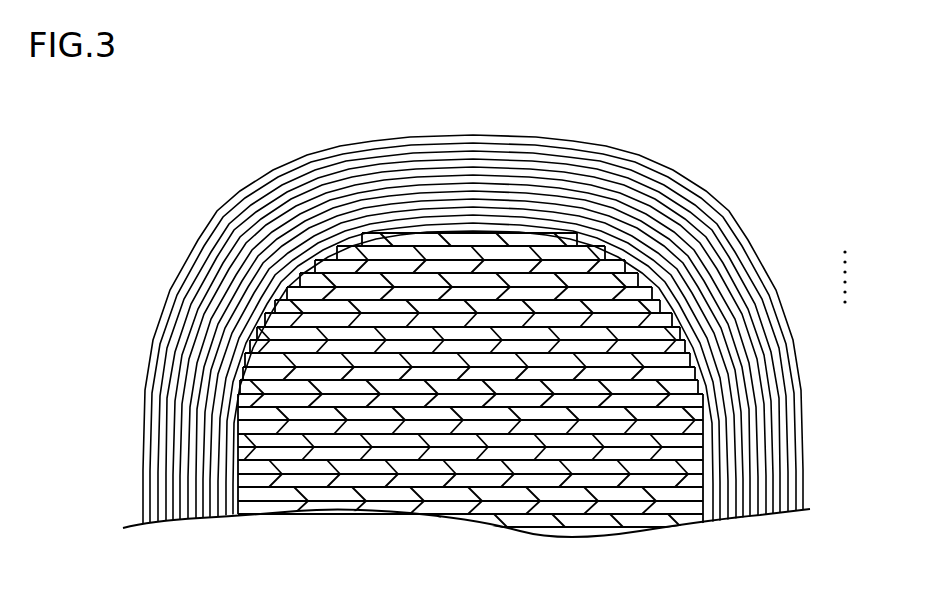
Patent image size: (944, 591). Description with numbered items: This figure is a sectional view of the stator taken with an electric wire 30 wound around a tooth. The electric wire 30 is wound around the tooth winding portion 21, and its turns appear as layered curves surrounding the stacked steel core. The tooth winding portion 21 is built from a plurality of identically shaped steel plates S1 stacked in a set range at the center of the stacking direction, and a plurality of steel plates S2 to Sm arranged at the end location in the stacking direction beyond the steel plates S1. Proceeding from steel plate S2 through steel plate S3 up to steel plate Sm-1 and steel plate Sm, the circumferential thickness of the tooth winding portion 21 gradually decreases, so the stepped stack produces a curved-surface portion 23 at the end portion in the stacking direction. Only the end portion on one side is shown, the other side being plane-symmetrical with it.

The tooth winding portion 21 is at (522, 222).
The curved-surface portion 23 is at (307, 270).
The electric wire 30 is at (635, 172).
The steel plate Sm is at (587, 215).
The steel plate Sm-1 is at (603, 243).
The steel plate S3 is at (693, 382).
The steel plate S2 is at (690, 400).
The steel plates S1 is at (697, 520).